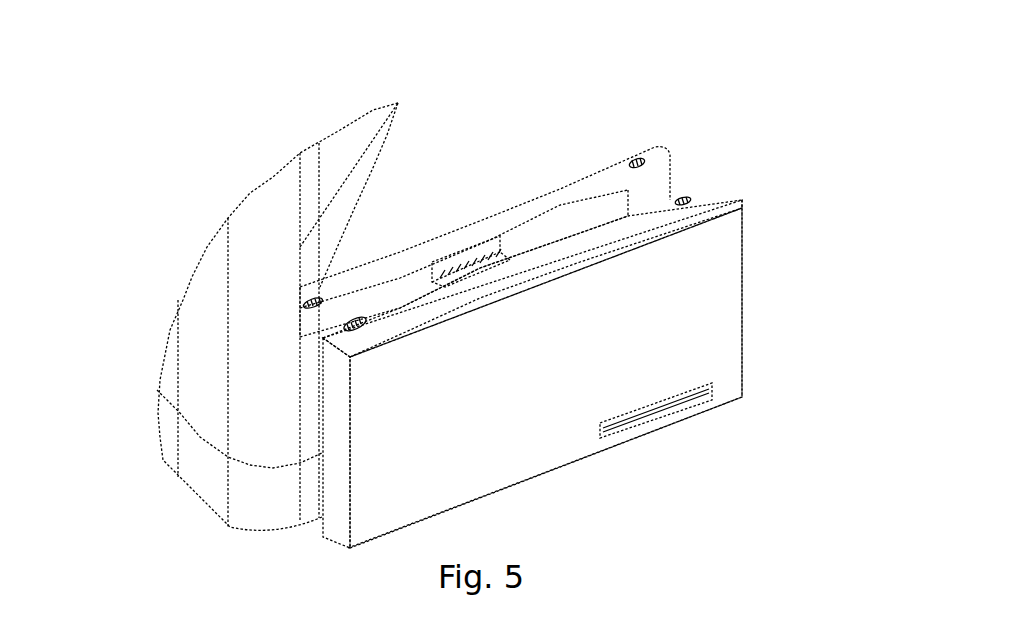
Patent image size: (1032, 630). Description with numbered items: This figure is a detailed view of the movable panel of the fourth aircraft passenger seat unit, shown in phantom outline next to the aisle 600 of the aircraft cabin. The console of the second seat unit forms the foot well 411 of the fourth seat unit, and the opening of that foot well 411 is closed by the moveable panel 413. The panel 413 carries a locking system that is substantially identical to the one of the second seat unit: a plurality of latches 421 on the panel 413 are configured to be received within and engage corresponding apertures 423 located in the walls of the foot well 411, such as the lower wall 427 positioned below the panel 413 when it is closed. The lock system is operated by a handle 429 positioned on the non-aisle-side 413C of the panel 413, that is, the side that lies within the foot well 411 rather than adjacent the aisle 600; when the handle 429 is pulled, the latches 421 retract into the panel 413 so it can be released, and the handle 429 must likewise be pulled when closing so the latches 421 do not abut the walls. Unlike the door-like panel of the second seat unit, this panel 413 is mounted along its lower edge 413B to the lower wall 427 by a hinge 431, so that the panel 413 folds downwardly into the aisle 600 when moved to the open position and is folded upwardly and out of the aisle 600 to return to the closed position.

The foot well 411 is at (588, 97).
The moveable panel 413 is at (762, 395).
The lower edge 413B is at (555, 250).
The non-aisle-side 413C is at (698, 312).
The latches 421 is at (683, 200).
The apertures 423 is at (637, 163).
The lower wall 427 is at (378, 273).
The handle 429 is at (657, 415).
The hinge 431 is at (482, 267).
The aisle 600 is at (753, 445).